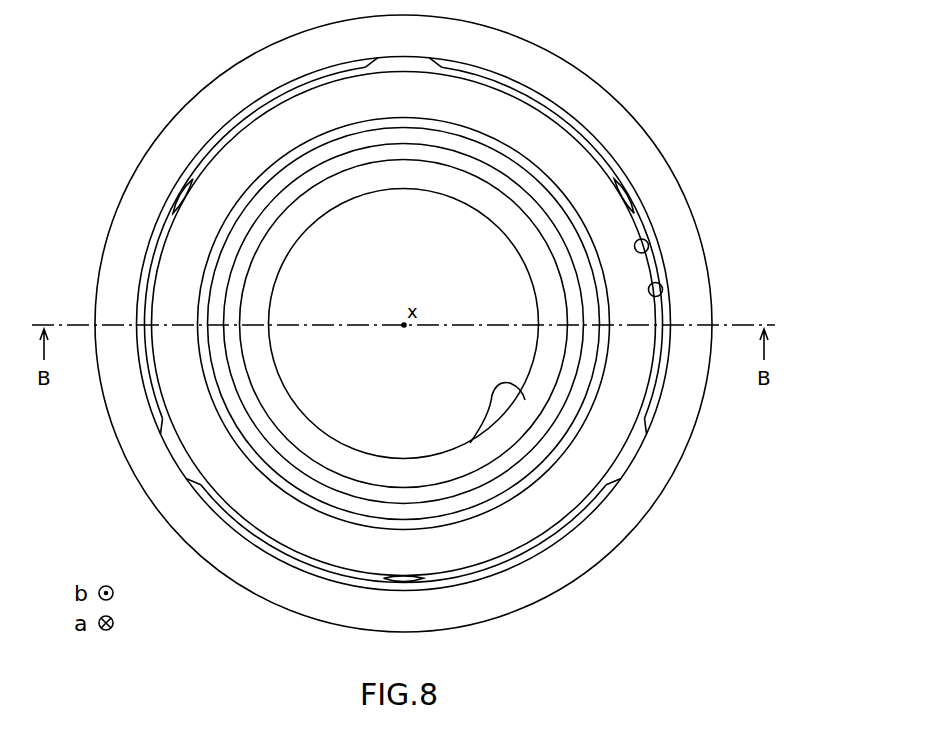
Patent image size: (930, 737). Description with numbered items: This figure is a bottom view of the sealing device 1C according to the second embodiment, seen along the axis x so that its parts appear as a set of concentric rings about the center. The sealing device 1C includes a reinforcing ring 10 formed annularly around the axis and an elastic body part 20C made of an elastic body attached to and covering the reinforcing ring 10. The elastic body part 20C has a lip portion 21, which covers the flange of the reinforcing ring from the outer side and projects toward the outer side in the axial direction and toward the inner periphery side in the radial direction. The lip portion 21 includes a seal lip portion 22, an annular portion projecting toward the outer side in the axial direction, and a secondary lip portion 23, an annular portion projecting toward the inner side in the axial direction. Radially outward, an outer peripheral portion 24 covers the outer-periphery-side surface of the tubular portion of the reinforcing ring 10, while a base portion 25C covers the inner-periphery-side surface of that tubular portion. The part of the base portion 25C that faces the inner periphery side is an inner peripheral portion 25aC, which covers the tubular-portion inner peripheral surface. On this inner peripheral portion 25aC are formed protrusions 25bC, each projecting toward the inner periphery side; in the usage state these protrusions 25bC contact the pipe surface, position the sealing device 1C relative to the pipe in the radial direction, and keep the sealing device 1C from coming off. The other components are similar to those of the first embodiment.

The sealing device 1C is at (727, 67).
The reinforcing ring 10 is at (290, 118).
The elastic body part 20C is at (720, 153).
The lip portion 21 is at (545, 375).
The seal lip portion 22 is at (503, 400).
The secondary lip portion 23 is at (523, 178).
The outer peripheral portion 24 is at (652, 140).
The base portion 25C is at (660, 246).
The inner peripheral portion 25aC is at (661, 295).
The protrusions 25bC is at (183, 200).